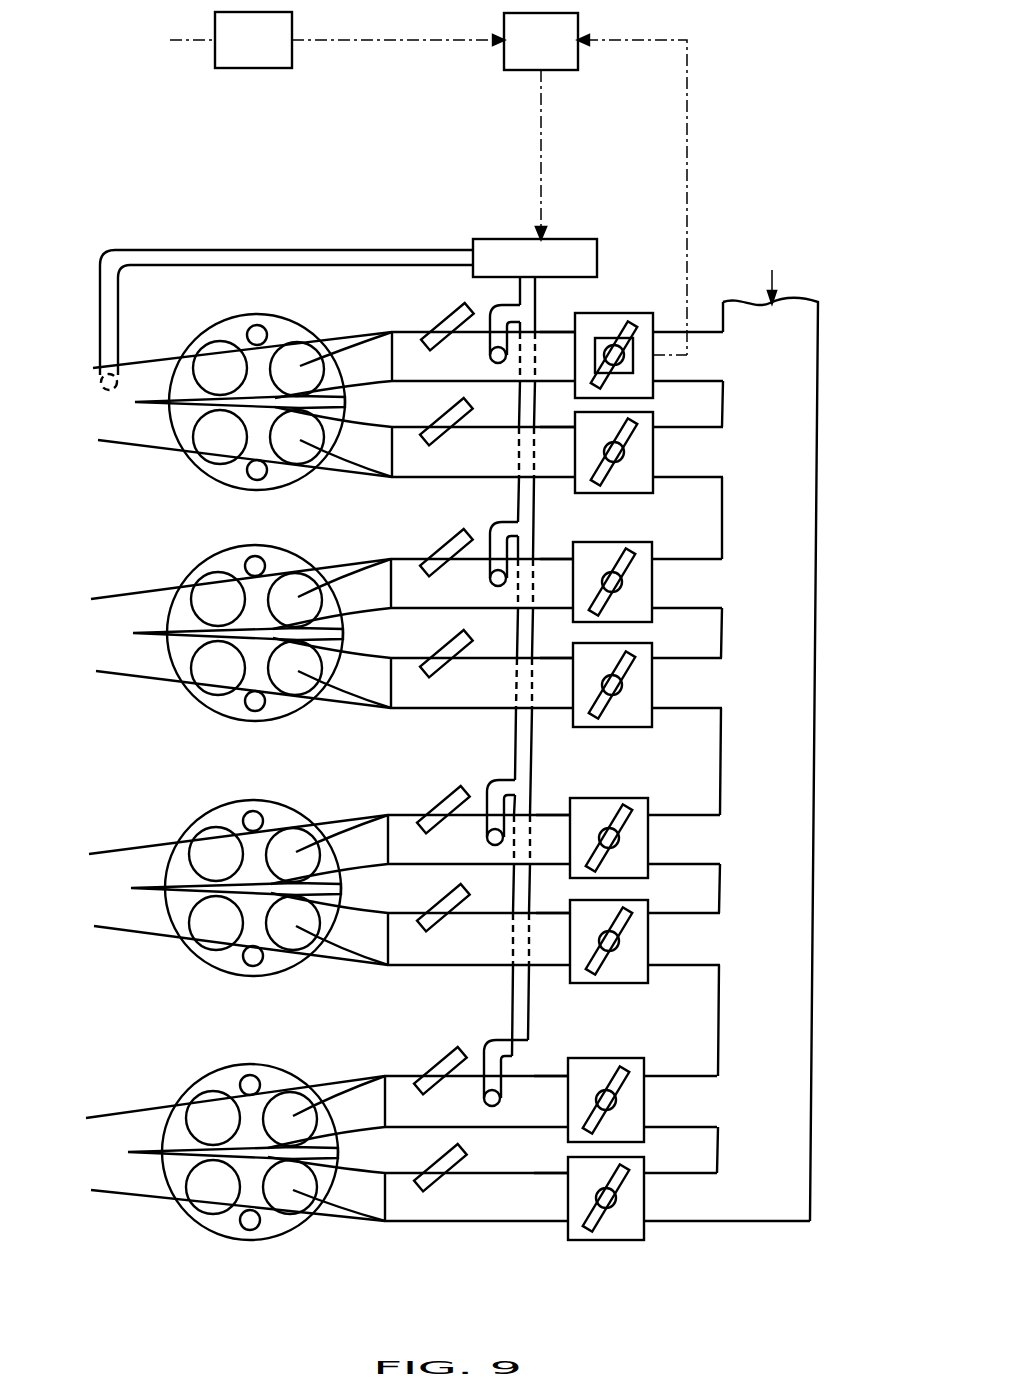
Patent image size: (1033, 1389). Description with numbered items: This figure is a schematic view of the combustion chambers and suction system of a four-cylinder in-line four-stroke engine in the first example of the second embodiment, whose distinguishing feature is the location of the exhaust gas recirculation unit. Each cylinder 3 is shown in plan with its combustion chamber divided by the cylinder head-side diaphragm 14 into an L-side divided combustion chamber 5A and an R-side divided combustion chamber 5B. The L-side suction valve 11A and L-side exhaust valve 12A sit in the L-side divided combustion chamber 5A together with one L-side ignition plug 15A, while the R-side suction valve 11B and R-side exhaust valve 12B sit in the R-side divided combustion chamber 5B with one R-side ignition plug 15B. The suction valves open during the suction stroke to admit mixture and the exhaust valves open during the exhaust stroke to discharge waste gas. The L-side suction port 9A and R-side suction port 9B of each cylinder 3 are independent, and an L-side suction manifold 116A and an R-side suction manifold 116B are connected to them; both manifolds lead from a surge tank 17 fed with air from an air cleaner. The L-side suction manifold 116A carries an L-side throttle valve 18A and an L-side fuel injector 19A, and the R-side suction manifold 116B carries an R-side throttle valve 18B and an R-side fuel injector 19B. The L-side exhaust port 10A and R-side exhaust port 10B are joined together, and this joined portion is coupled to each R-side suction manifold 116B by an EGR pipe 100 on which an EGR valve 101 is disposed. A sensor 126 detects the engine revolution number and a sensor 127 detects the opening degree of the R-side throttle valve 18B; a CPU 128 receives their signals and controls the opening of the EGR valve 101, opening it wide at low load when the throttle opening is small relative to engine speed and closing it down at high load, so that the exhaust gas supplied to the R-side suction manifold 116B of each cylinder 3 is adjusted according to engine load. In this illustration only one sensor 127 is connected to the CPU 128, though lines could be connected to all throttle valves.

The cylinder 3 is at (223, 330).
The L-side divided combustion chamber 5A is at (277, 476).
The R-side divided combustion chamber 5B is at (297, 340).
The L-side suction port 9A is at (368, 422).
The R-side suction port 9B is at (382, 324).
The L-side exhaust port 10A is at (130, 433).
The R-side exhaust port 10B is at (125, 377).
The L-side suction valve 11A is at (323, 467).
The R-side suction valve 11B is at (347, 325).
The L-side exhaust valve 12A is at (212, 449).
The R-side exhaust valve 12B is at (212, 363).
The cylinder head-side diaphragm 14 is at (252, 403).
The L-side ignition plug 15A is at (255, 472).
The R-side ignition plug 15B is at (255, 326).
The surge tank 17 is at (722, 513).
The L-side throttle valve 18A is at (655, 417).
The R-side throttle valve 18B is at (608, 313).
The L-side fuel injector 19A is at (437, 424).
The R-side fuel injector 19B is at (449, 318).
The EGR pipe 100 is at (375, 248).
The EGR valve 101 is at (597, 262).
The L-side suction manifold 116A is at (493, 433).
The R-side suction manifold 116B is at (555, 330).
The sensor 126 is at (273, 68).
The sensor 127 is at (595, 352).
The CPU 128 is at (560, 70).